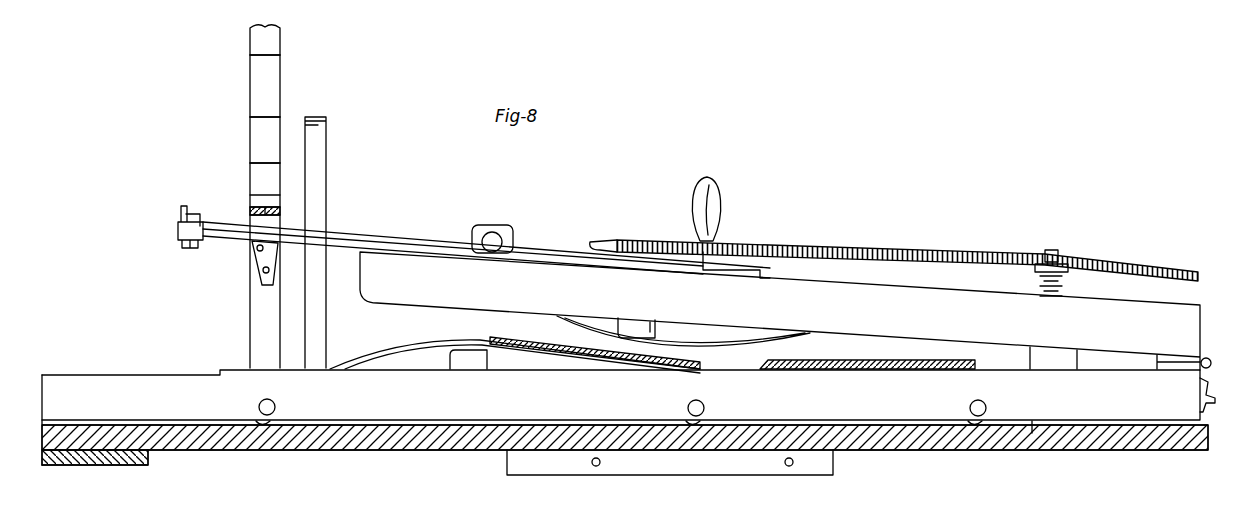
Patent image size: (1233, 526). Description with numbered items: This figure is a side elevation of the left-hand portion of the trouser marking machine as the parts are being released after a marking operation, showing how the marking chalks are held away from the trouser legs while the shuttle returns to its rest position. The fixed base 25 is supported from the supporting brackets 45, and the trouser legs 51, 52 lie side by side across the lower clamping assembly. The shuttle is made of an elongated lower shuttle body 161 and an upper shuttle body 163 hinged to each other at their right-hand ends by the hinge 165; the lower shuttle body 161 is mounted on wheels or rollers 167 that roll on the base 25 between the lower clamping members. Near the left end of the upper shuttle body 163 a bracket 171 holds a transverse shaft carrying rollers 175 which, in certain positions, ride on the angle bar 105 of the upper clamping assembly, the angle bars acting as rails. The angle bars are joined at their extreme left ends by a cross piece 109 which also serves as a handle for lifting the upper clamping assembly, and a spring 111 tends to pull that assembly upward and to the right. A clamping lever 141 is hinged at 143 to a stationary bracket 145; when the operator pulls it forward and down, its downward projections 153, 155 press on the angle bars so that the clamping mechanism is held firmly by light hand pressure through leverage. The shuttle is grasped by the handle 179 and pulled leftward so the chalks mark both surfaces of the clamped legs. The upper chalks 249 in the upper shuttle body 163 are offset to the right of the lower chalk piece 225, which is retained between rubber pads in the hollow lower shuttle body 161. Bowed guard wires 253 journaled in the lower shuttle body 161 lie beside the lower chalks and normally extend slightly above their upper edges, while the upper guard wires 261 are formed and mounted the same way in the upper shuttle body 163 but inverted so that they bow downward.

The base 25 is at (1012, 447).
The supporting brackets 45 is at (148, 466).
The lower shuttle body 161 is at (230, 385).
The wheels or rollers 167 is at (262, 424).
The clamping lever 141 is at (272, 92).
The downward projection 155 is at (262, 38).
The downward projection 153 is at (263, 148).
The hinge 143 is at (252, 210).
The stationary bracket 145 is at (256, 315).
The angle bar 105 is at (386, 231).
The cross piece 109 is at (178, 224).
The bracket 171 is at (505, 229).
The rollers 175 is at (488, 234).
The handle 179 is at (720, 212).
The spring 111 is at (932, 248).
The upper shuttle body 163 is at (878, 298).
The hinge 165 is at (1200, 345).
The upper chalks 249 is at (660, 330).
The upper guard wires 261 is at (745, 345).
The guard wires 253 is at (412, 348).
The trouser leg 52 is at (522, 337).
The trouser leg 51 is at (864, 361).
The chalk piece 225 is at (492, 362).